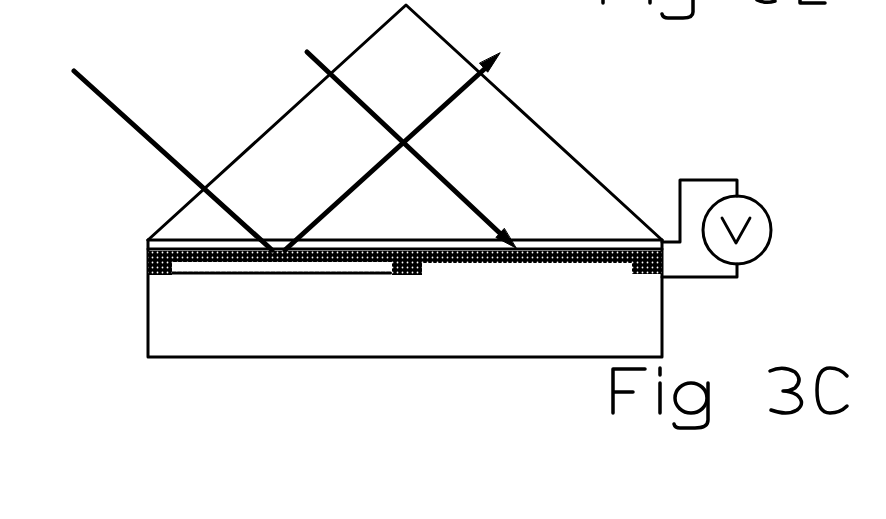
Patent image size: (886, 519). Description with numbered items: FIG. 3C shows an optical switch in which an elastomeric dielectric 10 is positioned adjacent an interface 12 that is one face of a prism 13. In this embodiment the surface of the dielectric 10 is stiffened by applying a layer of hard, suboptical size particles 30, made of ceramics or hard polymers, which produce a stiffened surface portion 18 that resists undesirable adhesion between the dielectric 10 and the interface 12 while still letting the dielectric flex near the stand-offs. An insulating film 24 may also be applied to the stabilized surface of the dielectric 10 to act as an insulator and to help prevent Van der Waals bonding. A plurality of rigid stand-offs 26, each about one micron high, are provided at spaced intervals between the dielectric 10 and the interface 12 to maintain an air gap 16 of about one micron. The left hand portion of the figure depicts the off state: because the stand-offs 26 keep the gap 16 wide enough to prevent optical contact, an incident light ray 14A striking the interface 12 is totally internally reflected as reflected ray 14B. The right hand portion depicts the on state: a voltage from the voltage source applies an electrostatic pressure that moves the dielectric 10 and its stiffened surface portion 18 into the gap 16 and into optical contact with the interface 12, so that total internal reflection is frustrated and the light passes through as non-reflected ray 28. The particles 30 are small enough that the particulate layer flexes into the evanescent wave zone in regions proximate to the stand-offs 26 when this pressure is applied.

The elastomeric dielectric 10 is at (373, 336).
The interface 12 is at (230, 260).
The prism 13 is at (563, 137).
The incident light ray 14A is at (113, 95).
The reflected light ray 14B is at (500, 70).
The air gap 16 is at (280, 272).
The stiffened surface portion 18 is at (502, 265).
The insulating film 24 is at (200, 250).
The stand-offs 26 is at (148, 262).
The non-reflected ray 28 is at (350, 83).
The particles 30 is at (202, 243).